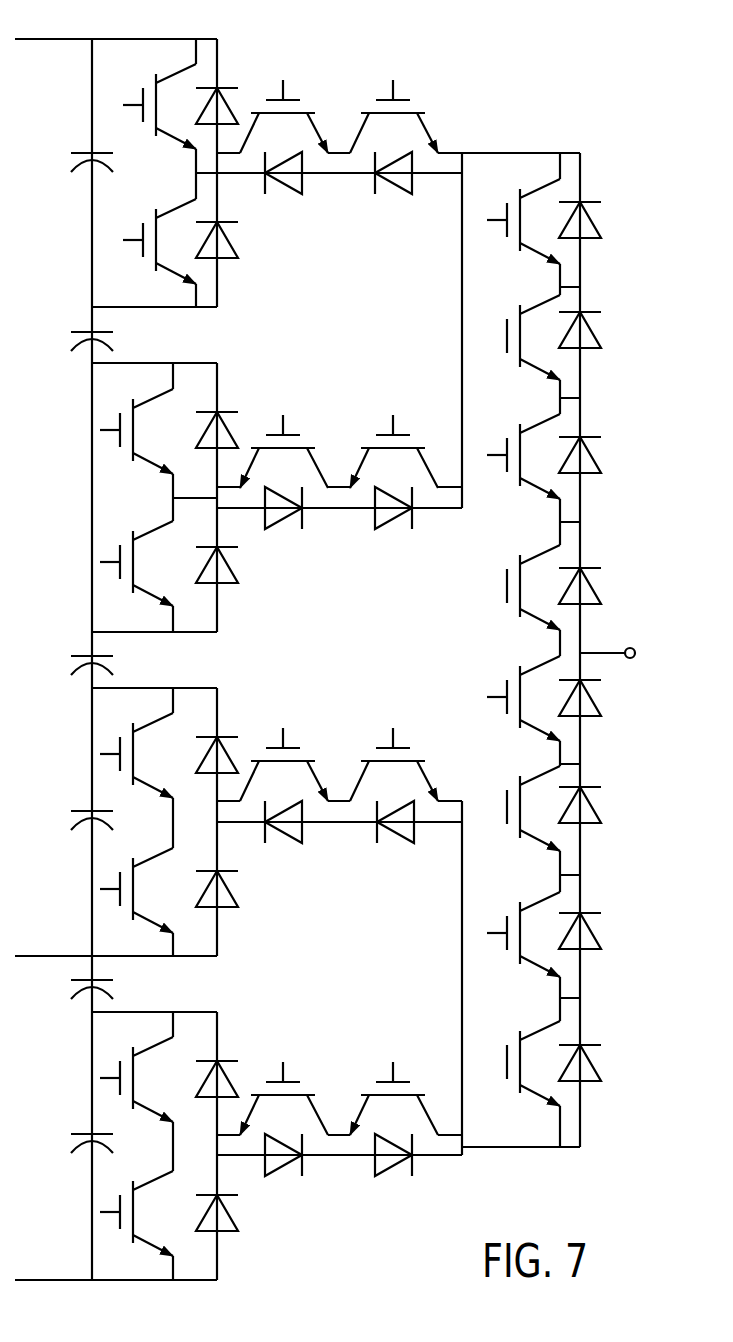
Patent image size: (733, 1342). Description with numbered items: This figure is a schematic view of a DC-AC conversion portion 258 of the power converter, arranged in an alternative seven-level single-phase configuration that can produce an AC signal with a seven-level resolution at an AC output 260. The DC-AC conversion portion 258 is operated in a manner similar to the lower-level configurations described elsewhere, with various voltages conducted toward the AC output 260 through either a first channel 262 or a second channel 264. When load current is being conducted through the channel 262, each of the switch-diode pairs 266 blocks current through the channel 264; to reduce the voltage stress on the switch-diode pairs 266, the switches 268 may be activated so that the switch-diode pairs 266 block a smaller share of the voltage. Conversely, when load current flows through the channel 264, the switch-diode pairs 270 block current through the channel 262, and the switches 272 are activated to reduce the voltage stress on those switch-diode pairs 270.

The DC-AC conversion portion 258 is at (542, 48).
The AC output 260 is at (634, 650).
The channel 262 is at (622, 384).
The channel 264 is at (622, 888).
The switch-diode pairs 266 is at (520, 788).
The switches 268 is at (327, 795).
The switch-diode pairs 270 is at (520, 312).
The switches 272 is at (352, 478).